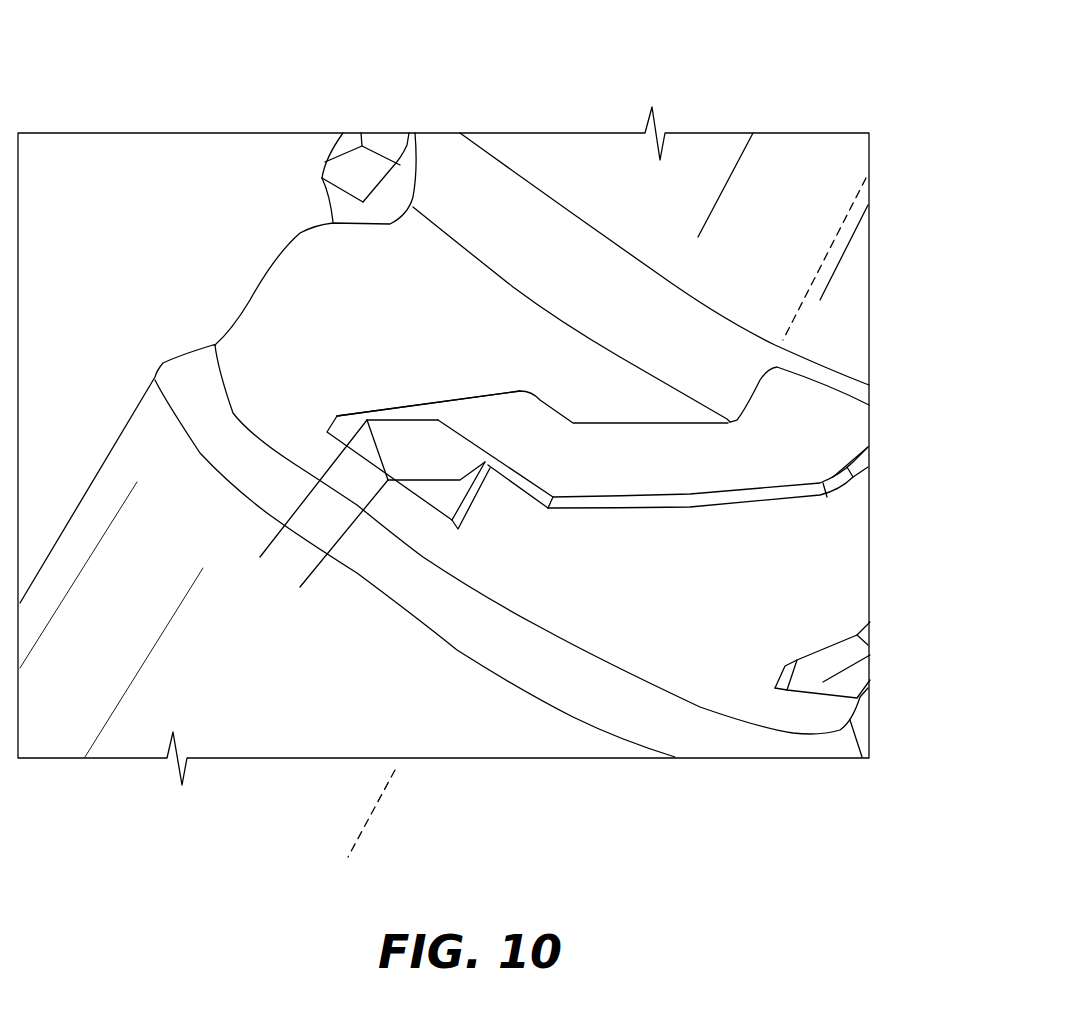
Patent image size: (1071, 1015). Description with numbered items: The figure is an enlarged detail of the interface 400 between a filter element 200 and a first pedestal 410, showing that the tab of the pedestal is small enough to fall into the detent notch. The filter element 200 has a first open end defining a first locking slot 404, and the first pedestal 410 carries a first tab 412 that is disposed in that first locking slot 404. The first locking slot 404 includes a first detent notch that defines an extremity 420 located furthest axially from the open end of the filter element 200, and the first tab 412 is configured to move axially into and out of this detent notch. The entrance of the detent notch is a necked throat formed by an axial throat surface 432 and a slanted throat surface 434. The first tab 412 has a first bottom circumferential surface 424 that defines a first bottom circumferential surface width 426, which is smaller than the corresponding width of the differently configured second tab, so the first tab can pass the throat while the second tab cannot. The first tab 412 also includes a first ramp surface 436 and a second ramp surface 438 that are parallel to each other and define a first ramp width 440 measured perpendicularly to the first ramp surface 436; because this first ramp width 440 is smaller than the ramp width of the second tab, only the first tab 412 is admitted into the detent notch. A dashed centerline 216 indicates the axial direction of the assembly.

The interface 400 is at (833, 98).
The filter element 200 is at (883, 194).
The centerline axis 216 is at (380, 803).
The first locking slot 404 is at (766, 393).
The first pedestal 410 is at (850, 437).
The first tab 412 is at (380, 434).
The extremity 420 is at (410, 497).
The first bottom circumferential surface 424 is at (332, 431).
The first bottom circumferential surface width 426 is at (312, 491).
The axial throat surface 432 is at (472, 497).
The slanted throat surface 434 is at (473, 395).
The first ramp surface 436 is at (419, 424).
The second ramp surface 438 is at (424, 474).
The first ramp width 440 is at (398, 480).